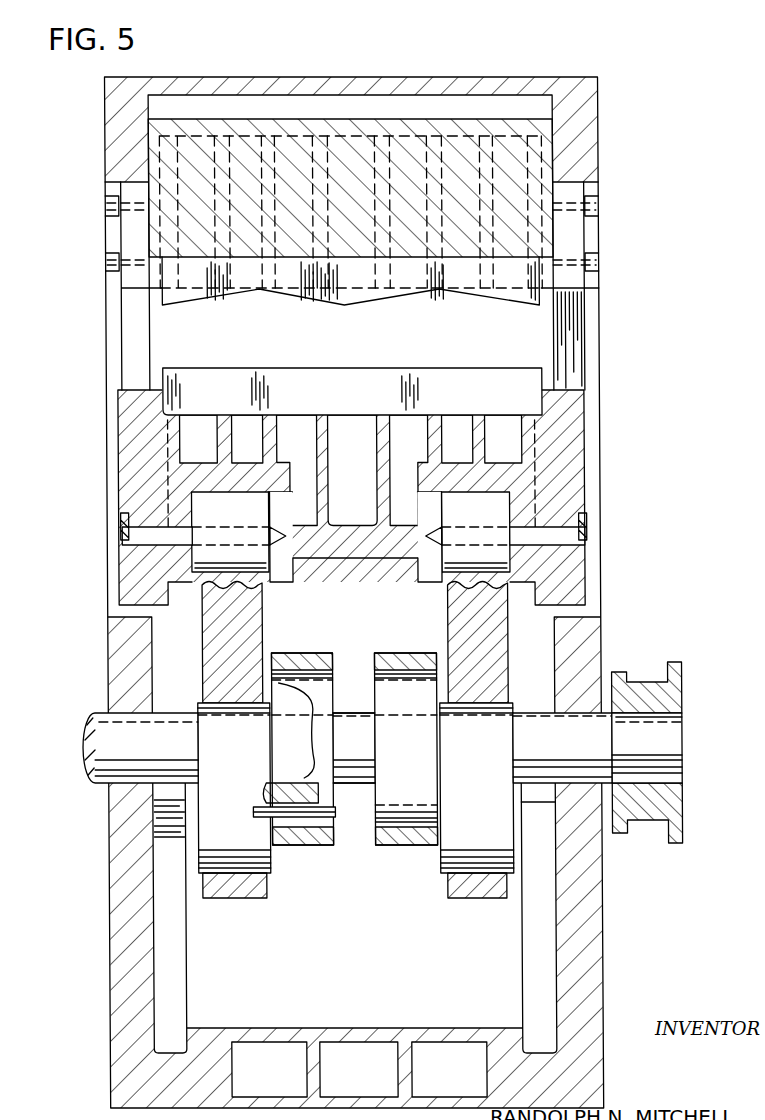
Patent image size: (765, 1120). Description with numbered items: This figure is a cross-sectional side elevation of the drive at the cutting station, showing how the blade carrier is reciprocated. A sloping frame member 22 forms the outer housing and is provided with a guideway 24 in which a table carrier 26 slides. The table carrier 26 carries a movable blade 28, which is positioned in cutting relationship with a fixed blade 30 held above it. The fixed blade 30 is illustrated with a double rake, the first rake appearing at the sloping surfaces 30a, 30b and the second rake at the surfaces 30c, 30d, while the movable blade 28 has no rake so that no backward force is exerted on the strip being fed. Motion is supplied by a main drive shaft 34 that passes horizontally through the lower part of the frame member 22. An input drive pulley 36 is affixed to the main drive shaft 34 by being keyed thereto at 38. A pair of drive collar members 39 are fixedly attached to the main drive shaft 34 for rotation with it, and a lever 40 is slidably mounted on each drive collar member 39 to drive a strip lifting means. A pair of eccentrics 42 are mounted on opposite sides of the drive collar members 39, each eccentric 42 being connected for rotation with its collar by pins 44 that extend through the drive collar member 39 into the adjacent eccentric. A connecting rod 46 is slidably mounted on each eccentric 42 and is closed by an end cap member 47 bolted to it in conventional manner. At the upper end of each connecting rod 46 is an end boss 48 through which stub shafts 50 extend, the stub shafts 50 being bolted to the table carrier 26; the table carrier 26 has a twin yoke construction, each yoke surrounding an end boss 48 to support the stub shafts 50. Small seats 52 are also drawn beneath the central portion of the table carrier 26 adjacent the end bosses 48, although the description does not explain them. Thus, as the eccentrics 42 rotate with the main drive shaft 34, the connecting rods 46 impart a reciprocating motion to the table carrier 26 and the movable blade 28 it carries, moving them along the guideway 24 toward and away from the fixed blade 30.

The sloping frame member 22 is at (114, 692).
The guideway 24 is at (130, 342).
The table carrier 26 is at (128, 437).
The movable blade 28 is at (352, 385).
The fixed blade 30 is at (183, 304).
The rake surface 30a is at (210, 301).
The rake surface 30b is at (299, 302).
The rake surface 30c is at (393, 302).
The rake surface 30d is at (481, 302).
The main drive shaft 34 is at (86, 746).
The input drive pulley 36 is at (673, 692).
The key 38 is at (679, 718).
The drive collar member 39 is at (372, 802).
The lever 40 is at (383, 655).
The eccentric 42 is at (266, 862).
The pin 44 is at (258, 800).
The connecting rod 46 is at (248, 642).
The end cap member 47 is at (220, 900).
The end boss 48 is at (213, 574).
The stub shaft 50 is at (152, 542).
The foot 52 is at (287, 584).